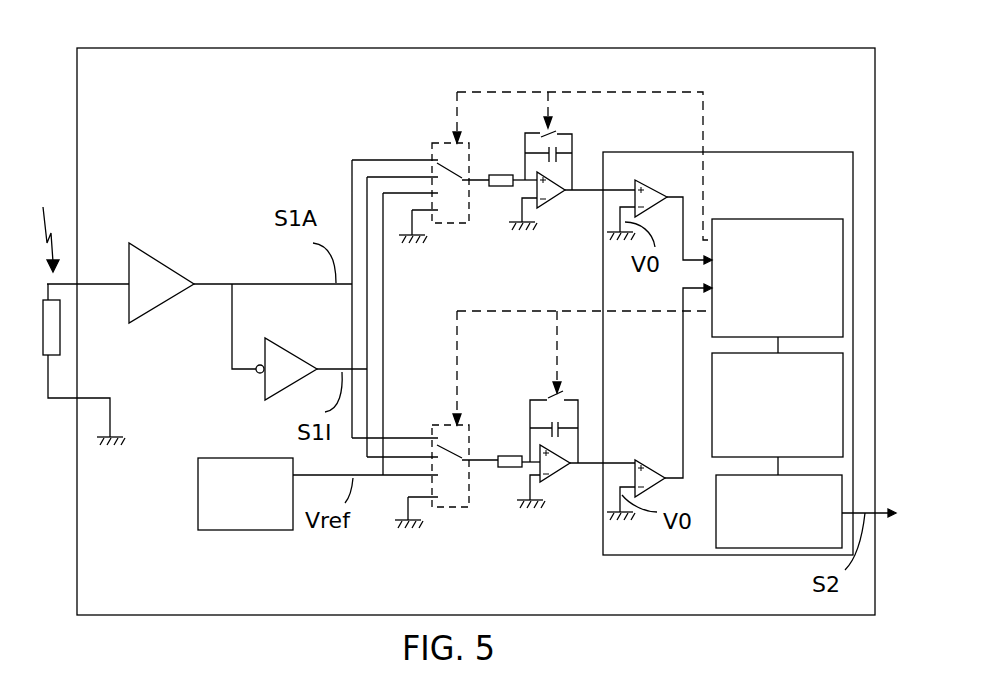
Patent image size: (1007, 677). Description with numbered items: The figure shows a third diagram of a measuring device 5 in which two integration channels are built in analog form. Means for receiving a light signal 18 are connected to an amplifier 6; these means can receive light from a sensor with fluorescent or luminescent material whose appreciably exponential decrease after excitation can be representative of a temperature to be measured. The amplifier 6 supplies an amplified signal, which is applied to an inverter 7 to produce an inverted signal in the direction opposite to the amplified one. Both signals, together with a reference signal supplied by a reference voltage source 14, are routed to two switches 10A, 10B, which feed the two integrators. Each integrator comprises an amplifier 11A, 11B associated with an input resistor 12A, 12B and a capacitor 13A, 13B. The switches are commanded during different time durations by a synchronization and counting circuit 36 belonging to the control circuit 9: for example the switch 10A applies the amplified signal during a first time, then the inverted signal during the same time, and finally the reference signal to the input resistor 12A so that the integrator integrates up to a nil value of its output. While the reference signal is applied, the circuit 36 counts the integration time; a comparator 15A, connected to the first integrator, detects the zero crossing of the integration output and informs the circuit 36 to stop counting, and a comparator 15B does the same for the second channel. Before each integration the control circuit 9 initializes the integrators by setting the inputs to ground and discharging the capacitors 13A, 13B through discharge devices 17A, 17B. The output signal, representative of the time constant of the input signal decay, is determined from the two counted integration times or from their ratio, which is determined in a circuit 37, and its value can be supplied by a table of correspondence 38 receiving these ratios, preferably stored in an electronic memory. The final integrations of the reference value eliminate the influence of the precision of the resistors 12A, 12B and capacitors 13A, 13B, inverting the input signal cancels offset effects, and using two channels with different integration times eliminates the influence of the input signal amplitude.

The measuring device 5 is at (805, 48).
The amplifier 6 is at (172, 268).
The inverter 7 is at (282, 348).
The control circuit 9 is at (782, 152).
The switch 10A is at (452, 225).
The switch 10B is at (455, 510).
The amplifier 11A is at (557, 195).
The amplifier 11B is at (563, 470).
The input resistor 12A is at (502, 172).
The input resistor 12B is at (515, 455).
The capacitor 13A is at (560, 152).
The capacitor 13B is at (562, 420).
The reference voltage source 14 is at (229, 457).
The comparator 15A is at (640, 182).
The comparator 15B is at (662, 437).
The discharge device 17A is at (543, 130).
The discharge device 17B is at (557, 390).
The means for receiving a light signal 18 is at (50, 333).
The synchronization and counting circuit 36 is at (752, 219).
The circuit 37 is at (712, 450).
The table of correspondence 38 is at (805, 548).